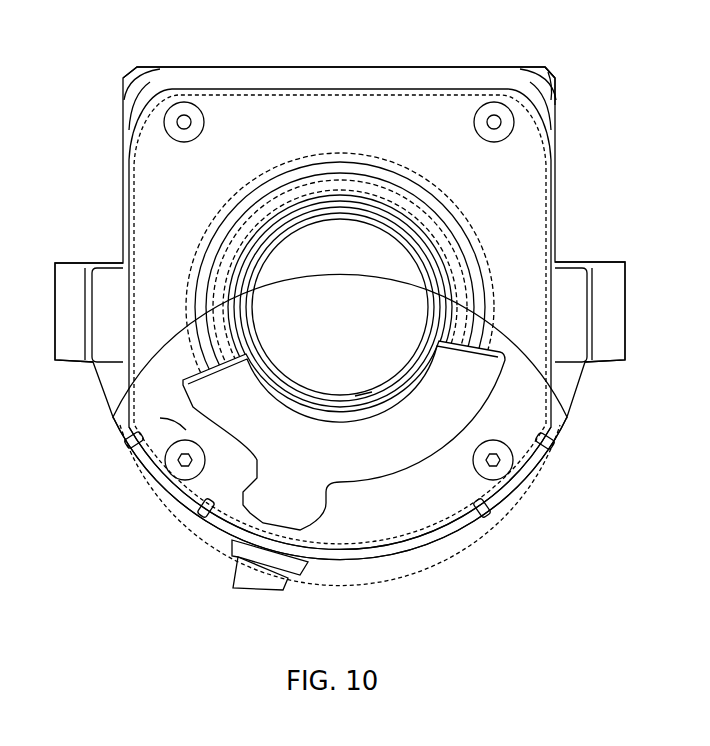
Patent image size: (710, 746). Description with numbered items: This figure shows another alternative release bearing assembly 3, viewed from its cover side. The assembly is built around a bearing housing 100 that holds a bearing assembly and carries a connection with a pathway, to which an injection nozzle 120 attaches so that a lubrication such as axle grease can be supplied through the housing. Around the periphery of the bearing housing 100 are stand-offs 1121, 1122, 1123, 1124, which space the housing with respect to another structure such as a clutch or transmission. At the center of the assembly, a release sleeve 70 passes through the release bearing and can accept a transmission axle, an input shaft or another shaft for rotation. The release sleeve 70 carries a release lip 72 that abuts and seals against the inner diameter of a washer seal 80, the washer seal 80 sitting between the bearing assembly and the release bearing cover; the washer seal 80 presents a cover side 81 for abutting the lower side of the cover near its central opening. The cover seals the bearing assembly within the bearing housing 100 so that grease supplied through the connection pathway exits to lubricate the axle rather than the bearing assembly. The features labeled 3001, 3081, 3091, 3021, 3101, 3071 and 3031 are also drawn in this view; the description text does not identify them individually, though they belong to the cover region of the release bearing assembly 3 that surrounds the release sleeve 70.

The release bearing assembly 3 is at (111, 59).
The bearing housing 100 is at (123, 130).
The mounting plate 3001 is at (345, 120).
The stand-off 1124 is at (498, 78).
The stand-off 1123 is at (107, 383).
The stand-off 1122 is at (605, 305).
The stand-off 1121 is at (220, 525).
The outer lens ring 3081 is at (215, 240).
The lens barrel ring 3091 is at (222, 273).
The cover side 81 is at (437, 265).
The washer seal 80 is at (240, 273).
The release lip 72 is at (423, 247).
The release sleeve 70 is at (300, 217).
The locking member 3021 is at (262, 362).
The projection 3101 is at (366, 392).
The slot 3071 is at (340, 512).
The rib 3031 is at (177, 420).
The injection nozzle 120 is at (304, 582).